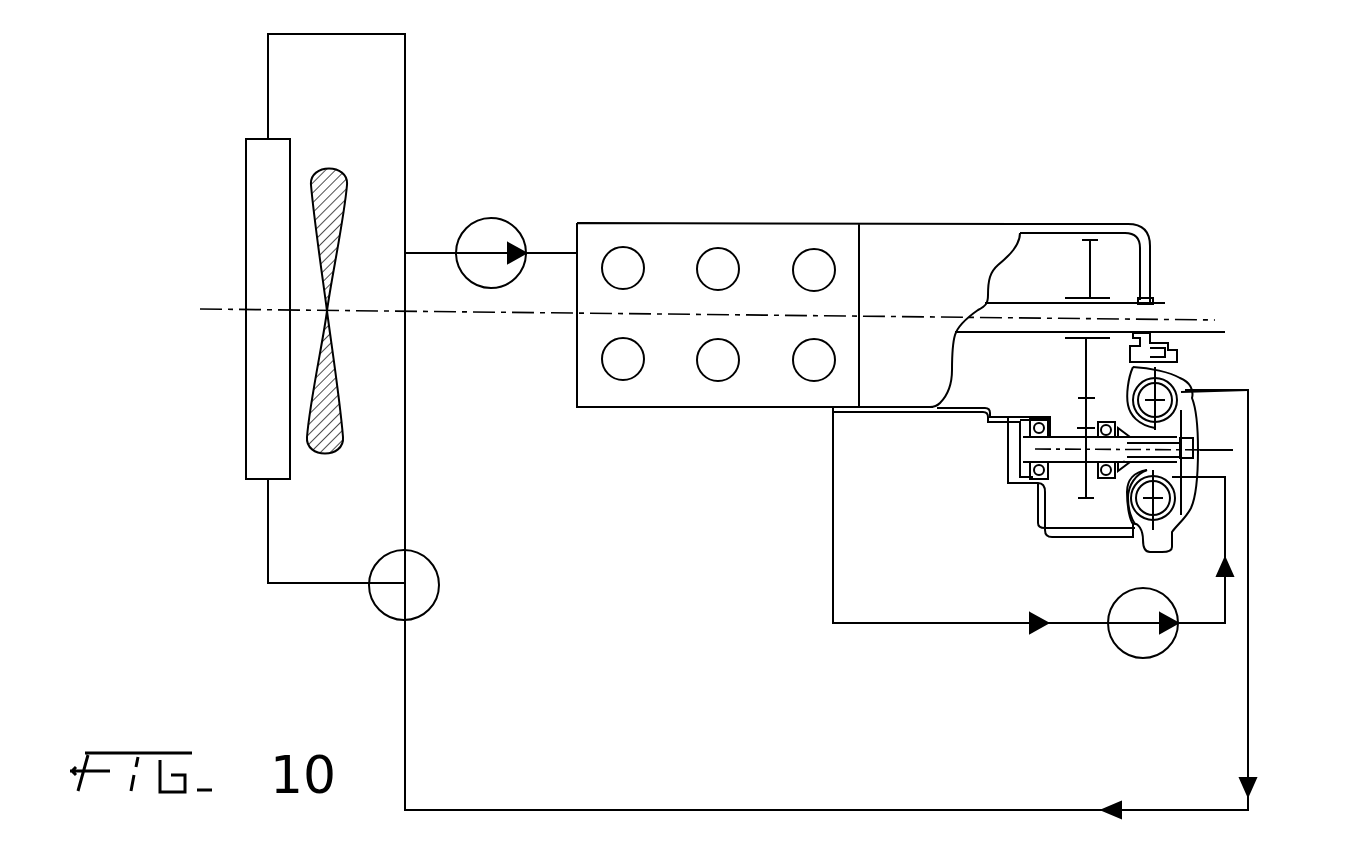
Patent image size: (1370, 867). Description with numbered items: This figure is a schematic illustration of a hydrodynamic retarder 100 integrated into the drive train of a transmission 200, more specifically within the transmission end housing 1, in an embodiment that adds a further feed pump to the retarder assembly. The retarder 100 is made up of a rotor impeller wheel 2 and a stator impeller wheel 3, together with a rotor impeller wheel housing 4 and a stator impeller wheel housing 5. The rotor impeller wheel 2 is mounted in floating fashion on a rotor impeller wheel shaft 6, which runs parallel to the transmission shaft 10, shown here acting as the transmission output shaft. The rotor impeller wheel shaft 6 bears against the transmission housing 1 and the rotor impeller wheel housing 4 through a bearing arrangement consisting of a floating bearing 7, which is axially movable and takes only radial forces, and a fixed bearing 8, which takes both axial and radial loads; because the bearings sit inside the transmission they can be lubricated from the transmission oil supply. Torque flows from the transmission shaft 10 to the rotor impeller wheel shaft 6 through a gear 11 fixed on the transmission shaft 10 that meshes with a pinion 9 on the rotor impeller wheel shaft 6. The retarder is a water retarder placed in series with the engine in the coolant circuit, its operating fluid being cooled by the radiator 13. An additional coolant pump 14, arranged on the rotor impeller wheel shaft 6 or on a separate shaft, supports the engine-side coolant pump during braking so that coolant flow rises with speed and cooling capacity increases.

The transmission housing 1 is at (1147, 270).
The rotor impeller wheel 2 is at (1143, 505).
The stator impeller wheel 3 is at (1167, 410).
The rotor impeller wheel housing 4 is at (1148, 351).
The stator impeller wheel housing 5 is at (1186, 376).
The rotor impeller wheel shaft 6 is at (1013, 442).
The floating bearing 7 is at (1106, 483).
The fixed bearing 8 is at (1043, 486).
The pinion 9 is at (1066, 408).
The transmission shaft 10 is at (1033, 308).
The gear 11 is at (1090, 268).
The radiator 13 is at (258, 193).
The coolant pump 14 is at (1126, 645).
The hydrodynamic retarder 100 is at (1275, 450).
The transmission 200 is at (905, 247).